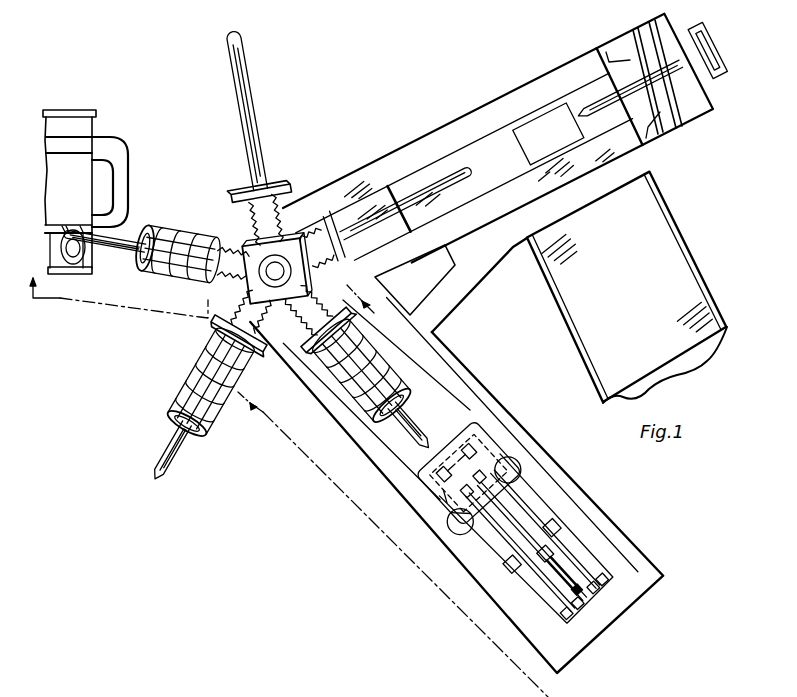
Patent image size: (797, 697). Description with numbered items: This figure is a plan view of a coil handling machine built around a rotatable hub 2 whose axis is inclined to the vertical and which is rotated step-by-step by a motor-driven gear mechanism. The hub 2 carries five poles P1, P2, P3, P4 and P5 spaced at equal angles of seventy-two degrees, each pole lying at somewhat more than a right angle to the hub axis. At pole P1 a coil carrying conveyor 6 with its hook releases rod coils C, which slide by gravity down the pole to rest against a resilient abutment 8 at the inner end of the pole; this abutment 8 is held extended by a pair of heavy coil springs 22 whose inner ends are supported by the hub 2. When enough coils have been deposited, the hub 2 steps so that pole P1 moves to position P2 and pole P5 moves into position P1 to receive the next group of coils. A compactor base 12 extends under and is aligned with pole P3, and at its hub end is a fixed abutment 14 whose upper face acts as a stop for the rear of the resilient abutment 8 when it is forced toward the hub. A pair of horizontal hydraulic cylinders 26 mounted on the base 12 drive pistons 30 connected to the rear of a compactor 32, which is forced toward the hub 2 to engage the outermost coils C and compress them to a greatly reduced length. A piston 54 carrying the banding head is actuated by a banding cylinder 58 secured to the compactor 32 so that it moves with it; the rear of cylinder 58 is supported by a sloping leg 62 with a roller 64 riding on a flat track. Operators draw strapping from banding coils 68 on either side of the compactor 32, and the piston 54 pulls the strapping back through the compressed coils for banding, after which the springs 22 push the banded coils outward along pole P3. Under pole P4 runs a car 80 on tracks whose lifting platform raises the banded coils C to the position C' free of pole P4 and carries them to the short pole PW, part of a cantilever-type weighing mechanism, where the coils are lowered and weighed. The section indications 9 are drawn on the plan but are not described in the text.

The rotatable hub 2 is at (592, 686).
The coil carrying conveyor 6 is at (85, 403).
The resilient abutment 8 is at (268, 190).
The section line 9- 9 is at (308, 360).
The compactor base 12 is at (404, 452).
The fixed abutment 14 is at (300, 345).
The heavy coil springs 22 is at (290, 232).
The horizontal hydraulic cylinders 26 is at (550, 527).
The pistons 30 is at (453, 505).
The compactor 32 is at (480, 453).
The piston 54 is at (450, 493).
The banding cylinder 58 is at (513, 520).
The sloping leg 62 is at (560, 575).
The roller 64 is at (600, 607).
The banding coils 68 is at (516, 466).
The car 80 is at (383, 197).
The coils C is at (375, 370).
The lifted coil position C' is at (178, 235).
The pole P1 is at (112, 252).
The pole P2 is at (172, 468).
The pole P3 is at (390, 414).
The pole P4 is at (471, 176).
The pole P5 is at (246, 96).
The short pole PW is at (590, 114).